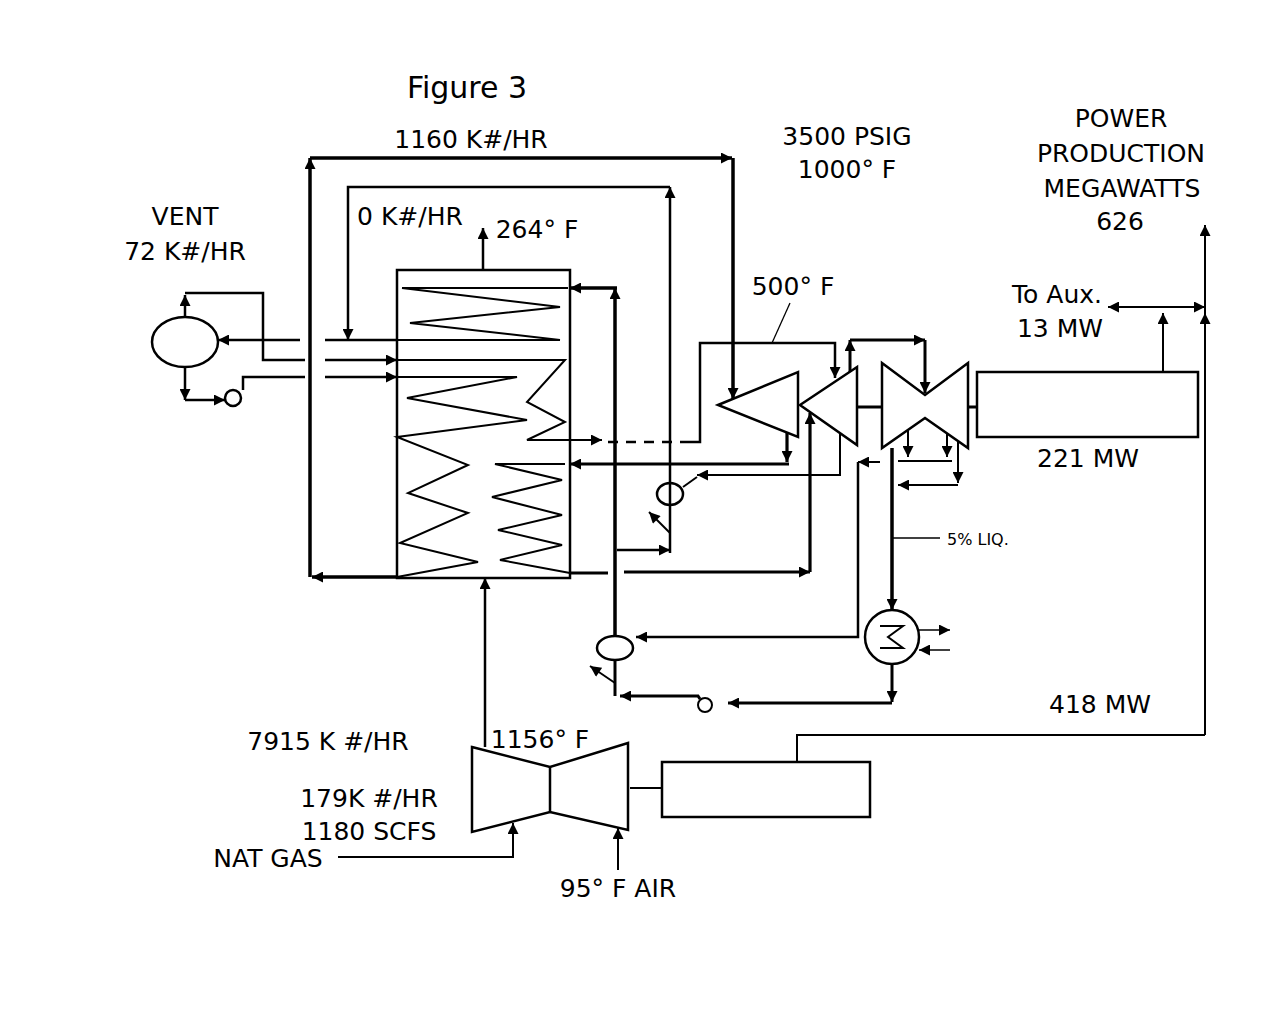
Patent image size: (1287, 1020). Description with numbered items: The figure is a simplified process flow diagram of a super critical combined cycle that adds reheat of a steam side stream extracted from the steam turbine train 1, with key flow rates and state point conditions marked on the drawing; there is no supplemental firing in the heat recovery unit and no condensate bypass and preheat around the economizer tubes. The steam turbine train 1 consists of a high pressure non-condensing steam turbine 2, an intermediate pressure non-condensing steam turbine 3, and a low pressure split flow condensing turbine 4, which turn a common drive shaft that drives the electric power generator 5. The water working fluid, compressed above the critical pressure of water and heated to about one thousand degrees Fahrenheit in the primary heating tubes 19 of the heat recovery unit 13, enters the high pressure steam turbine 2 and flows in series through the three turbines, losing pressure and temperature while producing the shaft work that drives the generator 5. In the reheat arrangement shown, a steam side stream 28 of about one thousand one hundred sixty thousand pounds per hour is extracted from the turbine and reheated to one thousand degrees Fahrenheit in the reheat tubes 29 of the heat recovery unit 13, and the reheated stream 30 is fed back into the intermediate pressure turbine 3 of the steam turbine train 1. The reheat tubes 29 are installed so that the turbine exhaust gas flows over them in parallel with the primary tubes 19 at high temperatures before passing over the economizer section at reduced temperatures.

The steam turbine train 1 is at (847, 368).
The high pressure non-condensing steam turbine 2 is at (758, 404).
The intermediate pressure non-condensing steam turbine 3 is at (828, 406).
The low pressure split flow condensing turbine 4 is at (925, 405).
The electric power generator 5 is at (1087, 404).
The heat recovery unit 13 is at (488, 398).
The primary heating tubes 19 is at (430, 452).
The steam side stream 28 is at (688, 463).
The reheat tubes 29 is at (512, 541).
The reheated stream 30 is at (770, 567).